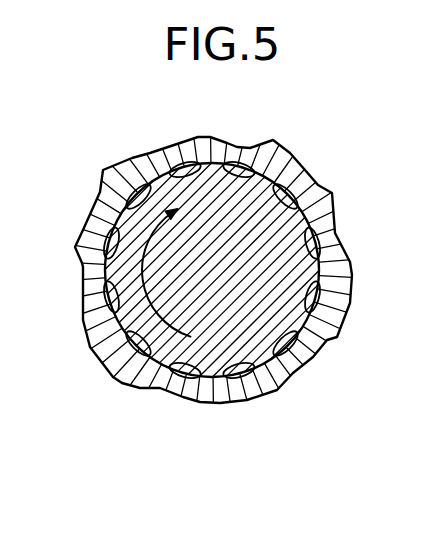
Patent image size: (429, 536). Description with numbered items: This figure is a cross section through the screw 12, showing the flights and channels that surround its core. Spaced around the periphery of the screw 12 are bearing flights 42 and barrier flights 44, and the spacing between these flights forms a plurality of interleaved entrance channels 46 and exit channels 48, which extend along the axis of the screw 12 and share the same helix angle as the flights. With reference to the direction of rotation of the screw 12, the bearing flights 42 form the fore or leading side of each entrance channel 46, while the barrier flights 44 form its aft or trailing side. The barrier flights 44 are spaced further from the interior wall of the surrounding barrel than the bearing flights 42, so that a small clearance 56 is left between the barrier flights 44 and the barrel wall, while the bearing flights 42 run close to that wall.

The screw 12 is at (253, 270).
The bearing flights 42 is at (215, 157).
The barrier flights 44 is at (240, 178).
The entrance channels 46 is at (178, 146).
The exit channels 48 is at (238, 160).
The clearance 56 is at (300, 193).